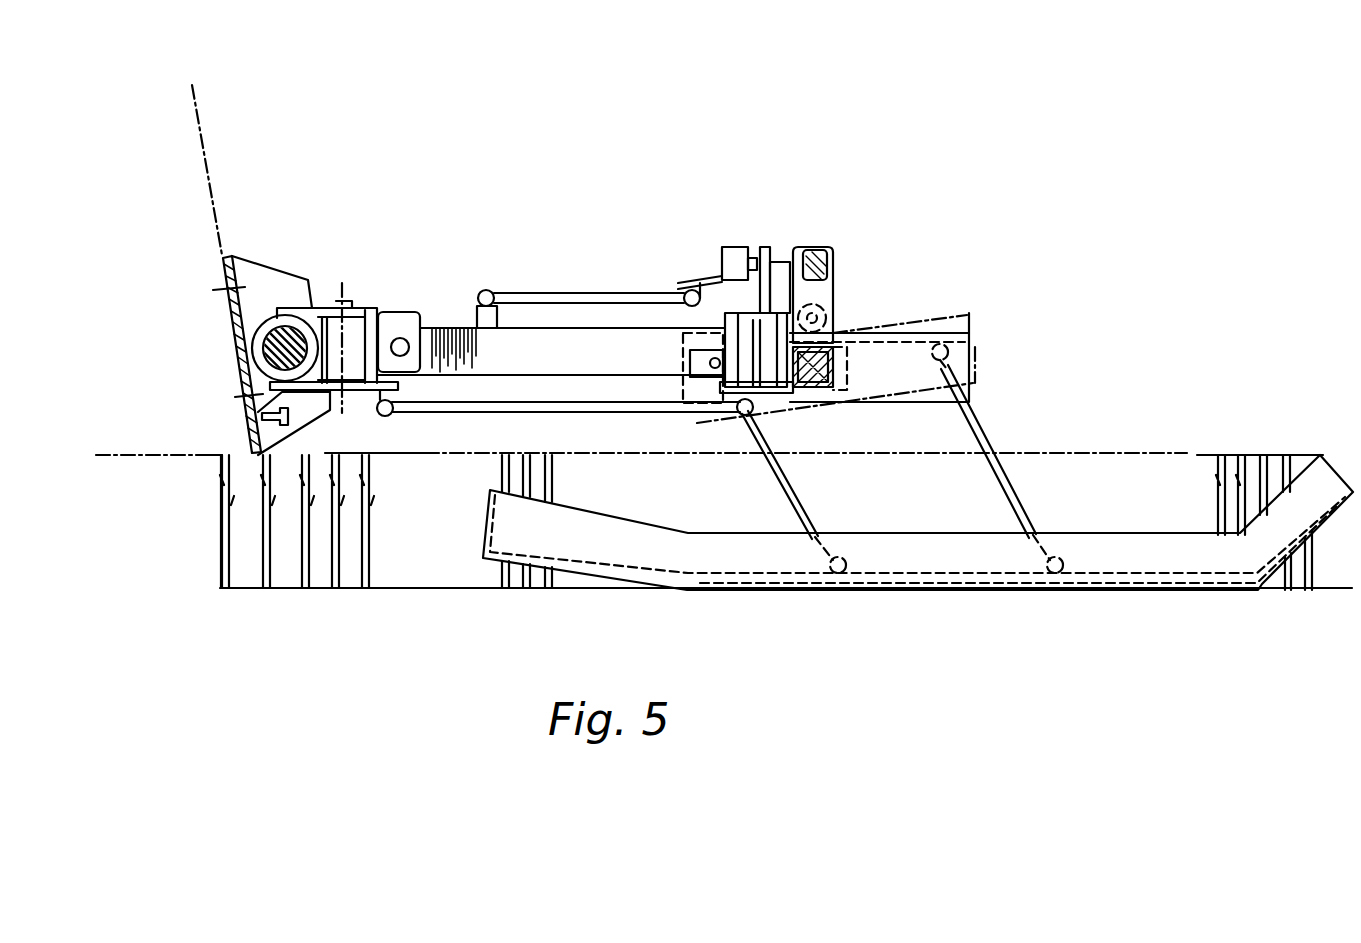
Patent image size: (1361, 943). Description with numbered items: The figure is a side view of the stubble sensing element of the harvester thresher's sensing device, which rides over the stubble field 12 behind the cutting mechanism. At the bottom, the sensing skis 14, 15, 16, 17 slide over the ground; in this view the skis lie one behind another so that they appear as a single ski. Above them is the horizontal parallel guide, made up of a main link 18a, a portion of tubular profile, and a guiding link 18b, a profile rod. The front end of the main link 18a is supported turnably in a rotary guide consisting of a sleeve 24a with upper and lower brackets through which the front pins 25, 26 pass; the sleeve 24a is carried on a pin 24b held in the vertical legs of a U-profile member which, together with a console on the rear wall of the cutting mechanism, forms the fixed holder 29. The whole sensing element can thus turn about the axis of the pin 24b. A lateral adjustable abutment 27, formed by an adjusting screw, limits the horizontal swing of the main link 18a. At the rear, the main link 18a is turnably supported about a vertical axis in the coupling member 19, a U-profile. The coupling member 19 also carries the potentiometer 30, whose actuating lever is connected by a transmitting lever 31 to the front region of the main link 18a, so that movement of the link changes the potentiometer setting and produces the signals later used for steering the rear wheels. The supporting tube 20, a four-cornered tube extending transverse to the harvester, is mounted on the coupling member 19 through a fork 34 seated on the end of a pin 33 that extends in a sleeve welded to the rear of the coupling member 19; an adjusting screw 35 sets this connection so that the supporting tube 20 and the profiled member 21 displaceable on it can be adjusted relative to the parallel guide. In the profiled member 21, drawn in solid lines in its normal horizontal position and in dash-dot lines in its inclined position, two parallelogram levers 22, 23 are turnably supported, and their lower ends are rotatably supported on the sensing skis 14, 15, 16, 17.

The crop field / plant stalks 12 is at (216, 530).
The sensing ski 14 is at (918, 597).
The sensing ski 15 is at (918, 597).
The sensing ski 16 is at (918, 597).
The sensing ski 17 is at (1162, 558).
The main link 18a is at (560, 345).
The guiding link 18b is at (503, 408).
The coupling member 19 is at (773, 387).
The supporting tube 20 is at (832, 388).
The profiled member 21 is at (878, 353).
The parallelogram lever 22 is at (795, 507).
The parallelogram lever 23 is at (993, 435).
The sleeve 24a is at (204, 354).
The pin 24b is at (268, 355).
The front pin 25 is at (336, 300).
The front pin 26 is at (717, 307).
The adjustable abutment 27 is at (400, 338).
The fixed holder 29 is at (263, 260).
The potentiometer 30 is at (735, 255).
The transmitting lever 31 is at (640, 293).
The pin 33 is at (830, 293).
The fork 34 is at (831, 251).
The adjusting screw 35 is at (868, 184).